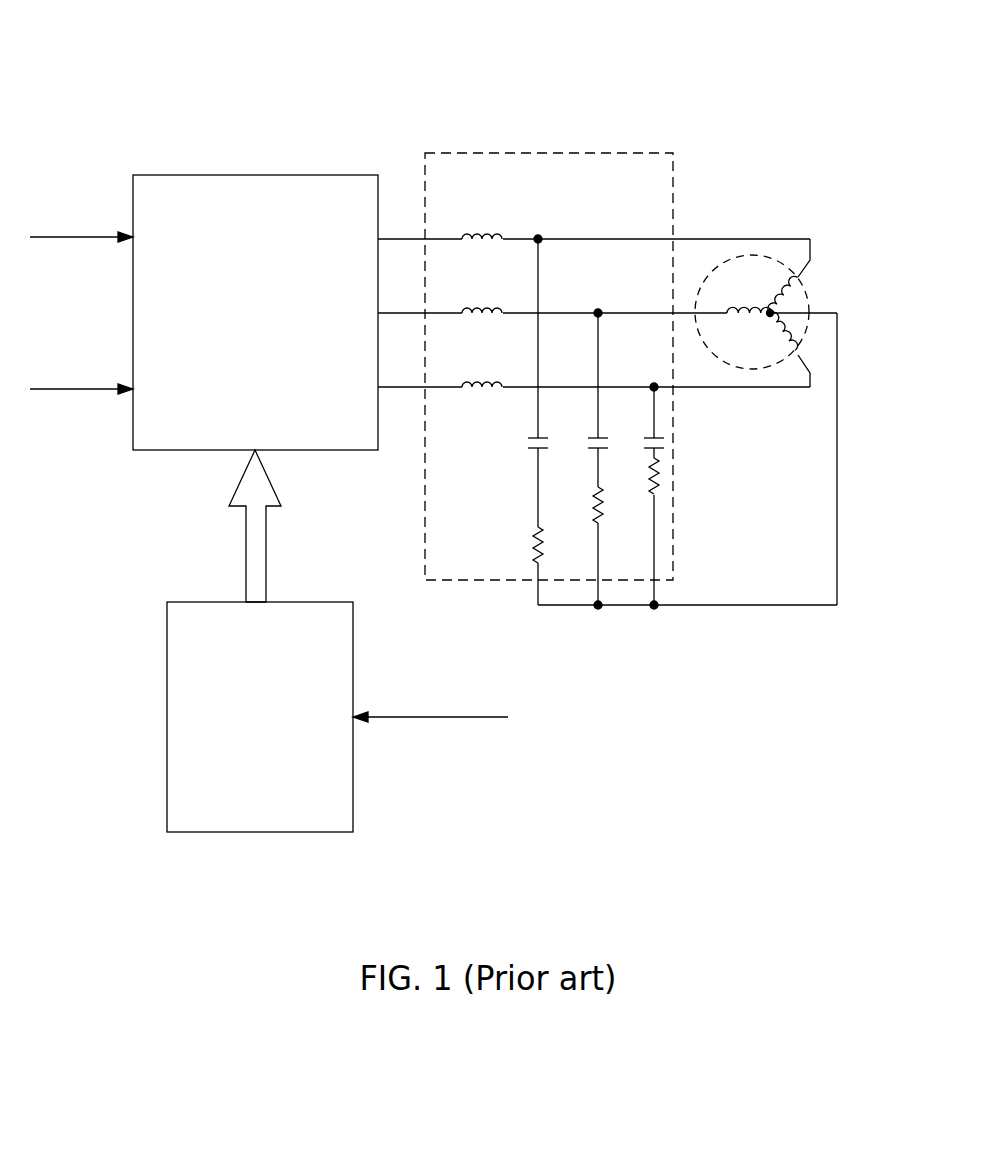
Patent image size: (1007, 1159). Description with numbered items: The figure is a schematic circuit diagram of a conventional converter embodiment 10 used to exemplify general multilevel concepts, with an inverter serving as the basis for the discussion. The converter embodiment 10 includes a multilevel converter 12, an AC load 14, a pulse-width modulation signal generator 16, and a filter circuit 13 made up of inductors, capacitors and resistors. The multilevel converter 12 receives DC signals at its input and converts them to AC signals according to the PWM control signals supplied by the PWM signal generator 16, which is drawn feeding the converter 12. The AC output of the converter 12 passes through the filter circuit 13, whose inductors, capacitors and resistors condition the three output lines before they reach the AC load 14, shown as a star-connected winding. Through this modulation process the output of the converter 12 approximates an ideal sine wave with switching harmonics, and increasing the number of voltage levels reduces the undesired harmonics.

The converter embodiment 10 is at (150, 62).
The multilevel converter 12 is at (255, 175).
The filter circuit 13 is at (582, 153).
The AC load 14 is at (760, 195).
The pulse-width modulation (PWM) signal generator 16 is at (167, 717).